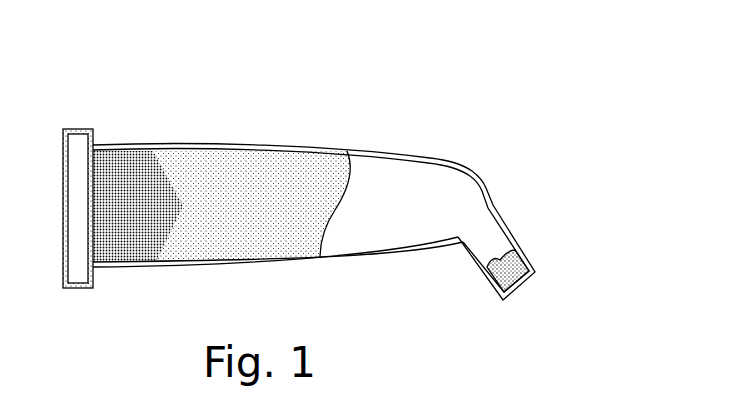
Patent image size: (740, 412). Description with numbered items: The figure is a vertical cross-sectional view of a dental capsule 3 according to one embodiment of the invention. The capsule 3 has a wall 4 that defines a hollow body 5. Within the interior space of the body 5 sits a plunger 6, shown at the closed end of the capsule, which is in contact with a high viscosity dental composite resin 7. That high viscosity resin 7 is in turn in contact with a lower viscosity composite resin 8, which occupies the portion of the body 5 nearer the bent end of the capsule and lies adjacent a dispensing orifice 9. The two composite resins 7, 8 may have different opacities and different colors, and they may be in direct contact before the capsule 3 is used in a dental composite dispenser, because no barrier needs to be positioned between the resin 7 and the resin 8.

The dental capsule 3 is at (83, 127).
The wall 4 is at (200, 144).
The hollow body 5 is at (486, 160).
The plunger 6 is at (131, 168).
The high viscosity dental composite resin 7 is at (270, 167).
The lower viscosity composite resin 8 is at (407, 192).
The dispensing orifice 9 is at (532, 268).